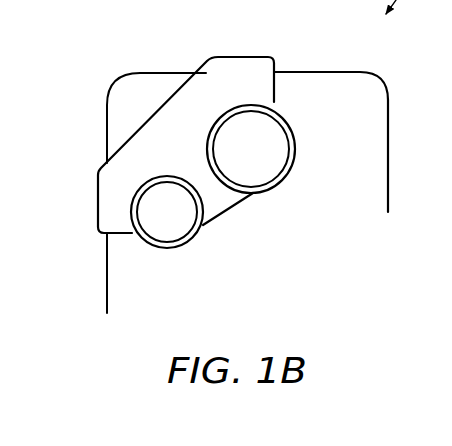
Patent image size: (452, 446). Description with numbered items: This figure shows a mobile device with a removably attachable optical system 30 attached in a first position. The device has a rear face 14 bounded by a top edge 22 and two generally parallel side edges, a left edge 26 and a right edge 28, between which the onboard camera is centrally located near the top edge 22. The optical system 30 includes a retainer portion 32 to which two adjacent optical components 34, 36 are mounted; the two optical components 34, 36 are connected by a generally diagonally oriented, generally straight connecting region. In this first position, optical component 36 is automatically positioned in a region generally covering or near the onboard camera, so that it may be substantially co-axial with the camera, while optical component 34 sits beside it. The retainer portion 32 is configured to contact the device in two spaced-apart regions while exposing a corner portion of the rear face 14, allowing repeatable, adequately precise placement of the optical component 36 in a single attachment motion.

The rear face 14 is at (350, 95).
The top edge 22 is at (312, 71).
The left edge 26 is at (390, 188).
The right edge 28 is at (107, 268).
The optical system 30 is at (84, 201).
The retainer portion 32 is at (163, 128).
The optical component 34 is at (180, 228).
The optical component 36 is at (272, 160).